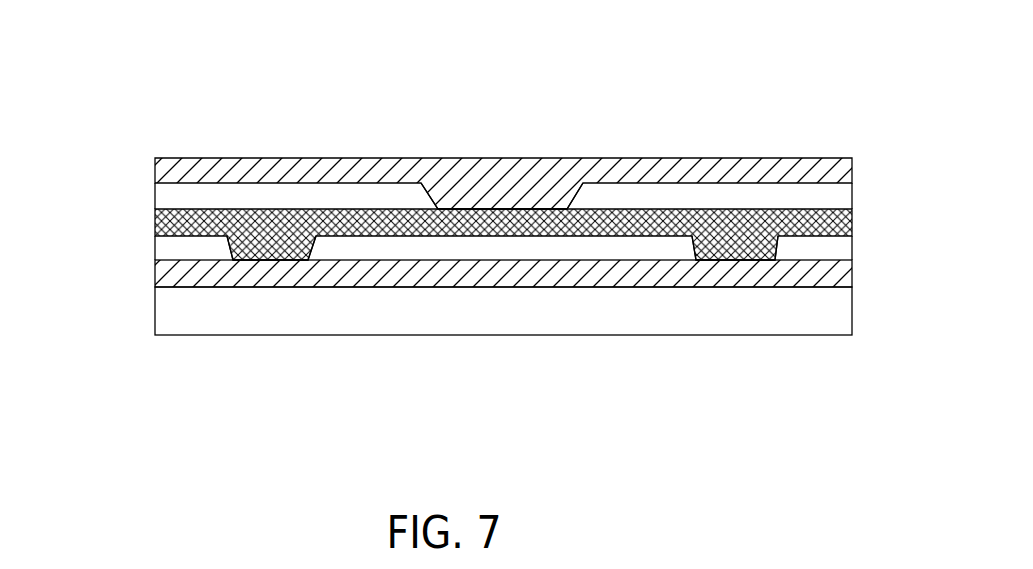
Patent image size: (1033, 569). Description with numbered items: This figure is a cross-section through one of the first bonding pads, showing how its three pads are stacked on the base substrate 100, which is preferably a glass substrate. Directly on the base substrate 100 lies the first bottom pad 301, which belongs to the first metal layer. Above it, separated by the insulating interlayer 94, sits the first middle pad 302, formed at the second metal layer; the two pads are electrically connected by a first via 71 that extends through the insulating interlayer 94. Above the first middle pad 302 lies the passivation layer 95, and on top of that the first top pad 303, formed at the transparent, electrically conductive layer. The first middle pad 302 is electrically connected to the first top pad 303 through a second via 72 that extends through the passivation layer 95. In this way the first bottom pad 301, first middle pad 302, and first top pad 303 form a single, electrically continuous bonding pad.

The base substrate 100 is at (802, 318).
The first bottom pad 301 is at (175, 283).
The first middle pad 302 is at (177, 228).
The first top pad 303 is at (193, 173).
The insulating interlayer 94 is at (812, 255).
The passivation layer 95 is at (803, 202).
The first via 71 is at (312, 250).
The second via 72 is at (430, 195).